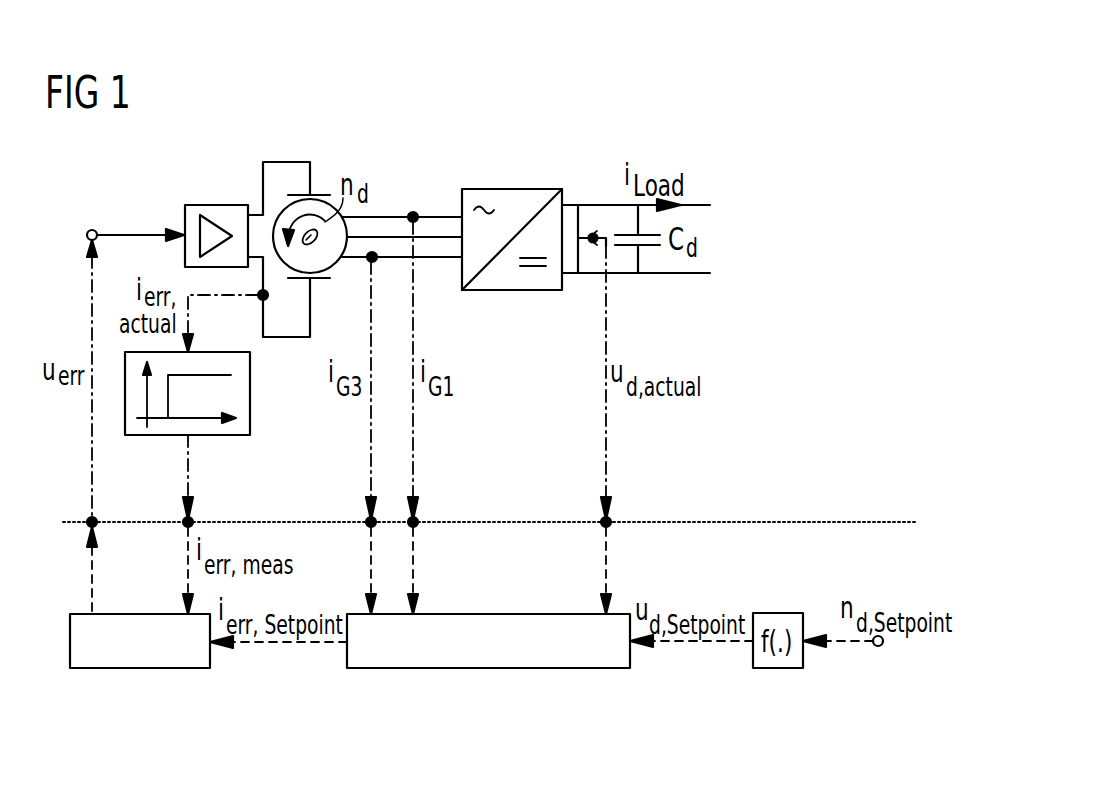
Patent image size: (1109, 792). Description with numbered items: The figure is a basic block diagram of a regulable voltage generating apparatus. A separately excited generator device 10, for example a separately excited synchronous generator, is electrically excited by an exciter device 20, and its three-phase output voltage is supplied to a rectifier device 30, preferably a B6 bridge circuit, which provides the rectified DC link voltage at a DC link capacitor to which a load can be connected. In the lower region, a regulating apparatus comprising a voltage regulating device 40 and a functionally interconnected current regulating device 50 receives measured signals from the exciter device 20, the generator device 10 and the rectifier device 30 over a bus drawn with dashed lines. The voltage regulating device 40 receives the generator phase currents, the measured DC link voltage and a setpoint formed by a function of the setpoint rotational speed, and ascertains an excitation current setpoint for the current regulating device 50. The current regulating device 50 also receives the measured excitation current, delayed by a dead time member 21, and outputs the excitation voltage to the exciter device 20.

The separately excited generator device 10 is at (329, 169).
The exciter device 20 is at (217, 204).
The dead time member 21 is at (250, 400).
The rectifier device 30 is at (514, 188).
The voltage regulating device 40 is at (486, 613).
The current regulating device 50 is at (138, 613).